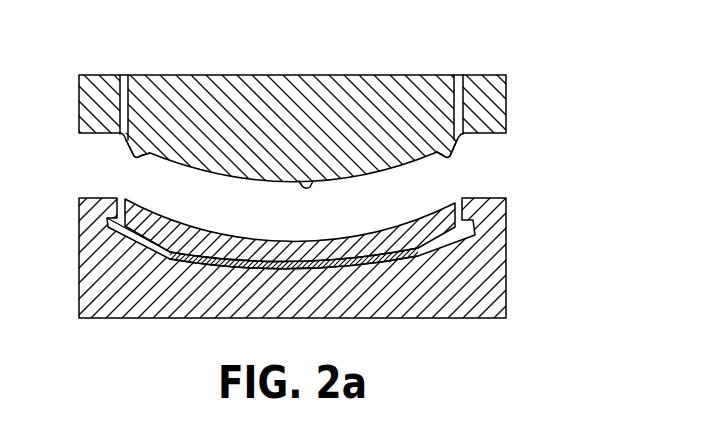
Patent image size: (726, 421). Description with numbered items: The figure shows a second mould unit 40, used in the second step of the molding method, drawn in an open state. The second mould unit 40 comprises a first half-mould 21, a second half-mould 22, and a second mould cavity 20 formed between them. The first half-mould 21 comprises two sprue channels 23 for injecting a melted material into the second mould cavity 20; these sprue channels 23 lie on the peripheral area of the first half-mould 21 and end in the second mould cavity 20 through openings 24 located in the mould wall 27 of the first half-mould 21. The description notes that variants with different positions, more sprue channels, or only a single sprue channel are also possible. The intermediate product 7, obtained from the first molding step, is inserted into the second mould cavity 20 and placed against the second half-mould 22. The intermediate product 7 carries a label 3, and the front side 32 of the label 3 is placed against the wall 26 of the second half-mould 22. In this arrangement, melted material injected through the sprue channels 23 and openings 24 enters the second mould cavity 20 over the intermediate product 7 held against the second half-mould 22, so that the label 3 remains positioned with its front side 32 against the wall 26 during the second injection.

The label 3 is at (177, 262).
The intermediate product 7 is at (366, 226).
The second mould cavity 20 is at (133, 236).
The first half-mould 21 is at (255, 90).
The second half-mould 22 is at (98, 282).
The sprue channels 23 is at (122, 92).
The openings 24 is at (138, 157).
The wall of the second half-mould 26 is at (362, 262).
The mould wall 27 is at (311, 180).
The front side of the label 32 is at (190, 282).
The second mould unit 40 is at (545, 173).